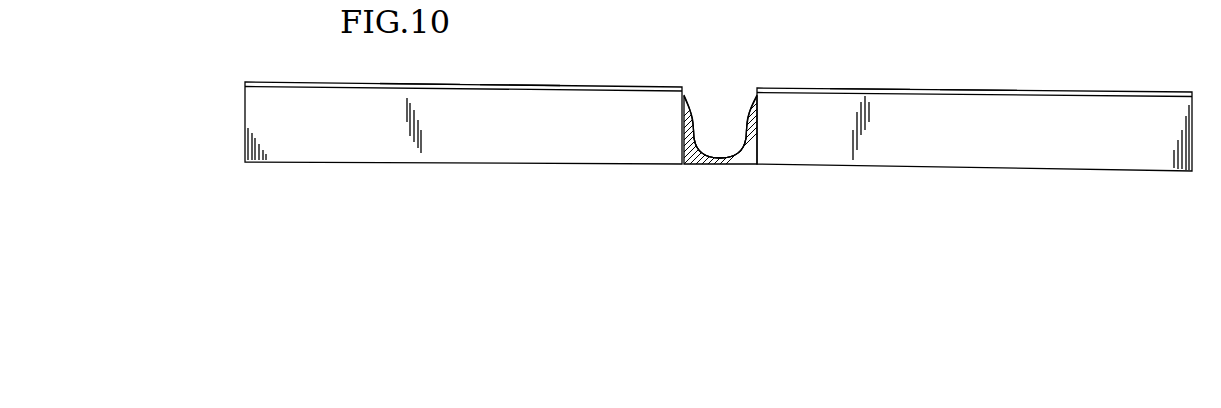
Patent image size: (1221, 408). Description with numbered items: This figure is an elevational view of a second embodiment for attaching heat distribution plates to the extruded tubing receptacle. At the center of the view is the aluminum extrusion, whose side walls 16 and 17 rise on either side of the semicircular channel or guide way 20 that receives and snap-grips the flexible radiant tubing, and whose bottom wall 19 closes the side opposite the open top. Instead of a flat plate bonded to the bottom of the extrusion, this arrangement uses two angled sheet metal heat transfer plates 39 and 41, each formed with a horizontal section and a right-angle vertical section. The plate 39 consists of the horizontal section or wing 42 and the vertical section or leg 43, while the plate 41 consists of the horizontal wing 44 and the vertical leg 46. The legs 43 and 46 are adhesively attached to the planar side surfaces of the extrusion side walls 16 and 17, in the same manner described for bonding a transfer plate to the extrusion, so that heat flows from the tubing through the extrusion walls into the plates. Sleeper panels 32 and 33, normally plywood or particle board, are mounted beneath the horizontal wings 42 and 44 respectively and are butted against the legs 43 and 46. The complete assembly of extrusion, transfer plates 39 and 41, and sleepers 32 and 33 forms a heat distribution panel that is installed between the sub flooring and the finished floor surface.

The side wall member 16 is at (752, 132).
The side wall member 17 is at (687, 130).
The bottom wall 19 is at (735, 160).
The channel or guide way 20 is at (720, 135).
The sleeper panel 32 is at (966, 148).
The sleeper panel 33 is at (547, 147).
The sheet metal heat transfer plate 39 is at (869, 86).
The sheet metal heat transfer plate 41 is at (517, 81).
The horizontal section or wing 42 is at (975, 89).
The right angular vertical section or leg 43 is at (763, 112).
The horizontal section or wing 44 is at (418, 83).
The vertical section or leg 46 is at (681, 112).